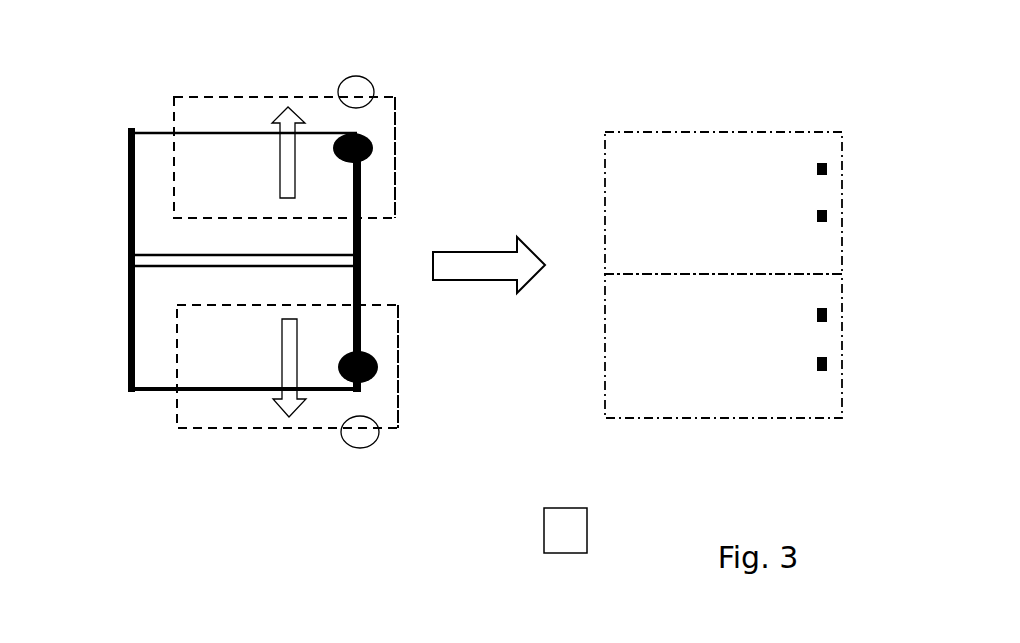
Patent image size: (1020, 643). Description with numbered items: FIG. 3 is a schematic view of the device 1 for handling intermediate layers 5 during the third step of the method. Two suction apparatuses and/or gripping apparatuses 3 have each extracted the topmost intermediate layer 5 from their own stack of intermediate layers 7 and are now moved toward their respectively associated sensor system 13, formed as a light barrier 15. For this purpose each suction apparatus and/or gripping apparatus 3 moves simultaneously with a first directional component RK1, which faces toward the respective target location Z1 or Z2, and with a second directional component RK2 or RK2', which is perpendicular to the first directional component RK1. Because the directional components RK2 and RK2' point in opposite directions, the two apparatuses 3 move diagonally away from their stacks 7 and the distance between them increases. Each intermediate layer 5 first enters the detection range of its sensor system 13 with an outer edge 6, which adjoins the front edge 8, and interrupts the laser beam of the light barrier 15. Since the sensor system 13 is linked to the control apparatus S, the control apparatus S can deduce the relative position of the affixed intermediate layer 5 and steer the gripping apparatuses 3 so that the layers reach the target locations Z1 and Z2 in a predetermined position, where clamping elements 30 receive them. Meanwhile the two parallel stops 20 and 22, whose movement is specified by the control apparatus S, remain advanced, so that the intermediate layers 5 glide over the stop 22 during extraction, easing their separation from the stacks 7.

The device 1 is at (257, 306).
The suction apparatus and/or gripping apparatus 3 is at (372, 155).
The intermediate layer 5 is at (155, 210).
The outer edge 6 is at (230, 97).
The stack of intermediate layers 7 is at (150, 106).
The front edge 8 is at (395, 212).
The sensor system 13 is at (417, 287).
The light barrier 15 is at (362, 88).
The stop 20 is at (128, 152).
The stop 22 is at (362, 260).
The clamping element 30 is at (827, 168).
The first directional component RK1 is at (500, 272).
The second directional component RK2 is at (307, 108).
The second directional component RK2' is at (302, 417).
The first target location Z1 is at (662, 146).
The second target location Z2 is at (706, 400).
The control apparatus S is at (565, 530).